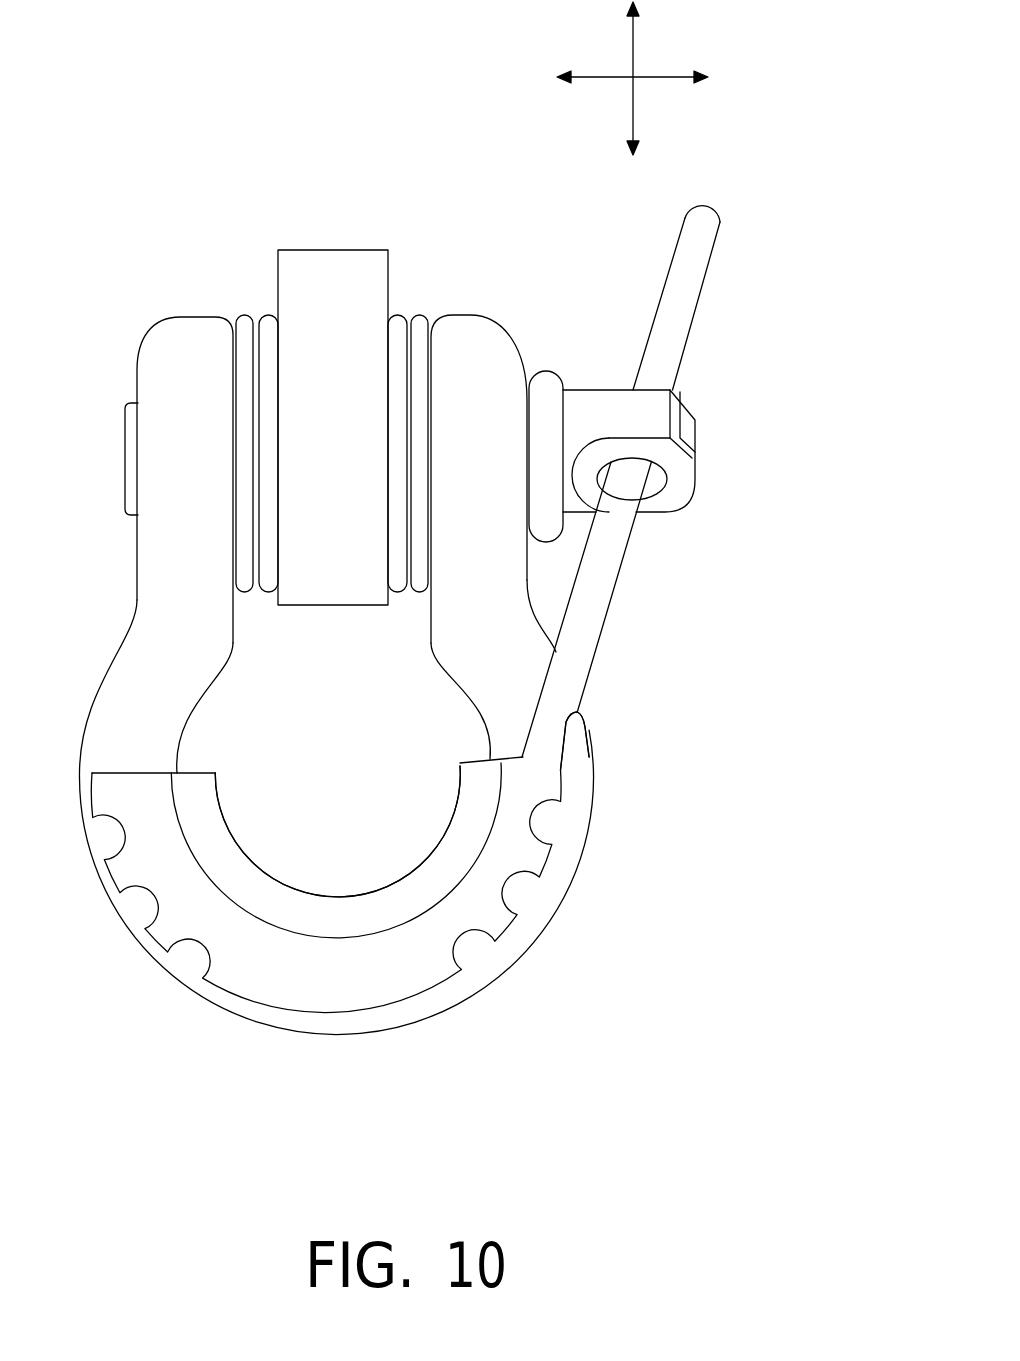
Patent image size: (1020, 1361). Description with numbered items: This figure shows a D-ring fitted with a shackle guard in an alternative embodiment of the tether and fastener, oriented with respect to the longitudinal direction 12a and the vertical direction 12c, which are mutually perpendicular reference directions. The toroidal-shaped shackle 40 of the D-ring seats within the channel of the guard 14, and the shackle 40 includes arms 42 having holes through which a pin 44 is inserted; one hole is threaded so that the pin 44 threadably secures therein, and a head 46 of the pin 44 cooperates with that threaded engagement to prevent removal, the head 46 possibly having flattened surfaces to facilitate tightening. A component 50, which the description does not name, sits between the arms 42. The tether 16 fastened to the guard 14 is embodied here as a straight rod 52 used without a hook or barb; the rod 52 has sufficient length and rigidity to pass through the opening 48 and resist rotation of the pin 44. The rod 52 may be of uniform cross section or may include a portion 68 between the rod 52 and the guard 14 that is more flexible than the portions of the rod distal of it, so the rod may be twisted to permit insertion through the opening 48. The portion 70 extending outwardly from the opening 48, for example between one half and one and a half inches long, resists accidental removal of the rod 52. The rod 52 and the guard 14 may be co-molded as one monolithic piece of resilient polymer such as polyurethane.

The longitudinal direction 12a is at (680, 78).
The vertical direction 12c is at (633, 50).
The guard 14 is at (338, 860).
The tether 16 is at (718, 684).
The shackle 40 is at (140, 625).
The arms 42 is at (203, 340).
The pin 44 is at (130, 462).
The head 46 is at (543, 387).
The opening 48 is at (606, 467).
The block 50 is at (335, 265).
The rod 52 is at (602, 575).
The flexible portion 68 is at (592, 698).
The outwardly extending portion 70 is at (733, 225).